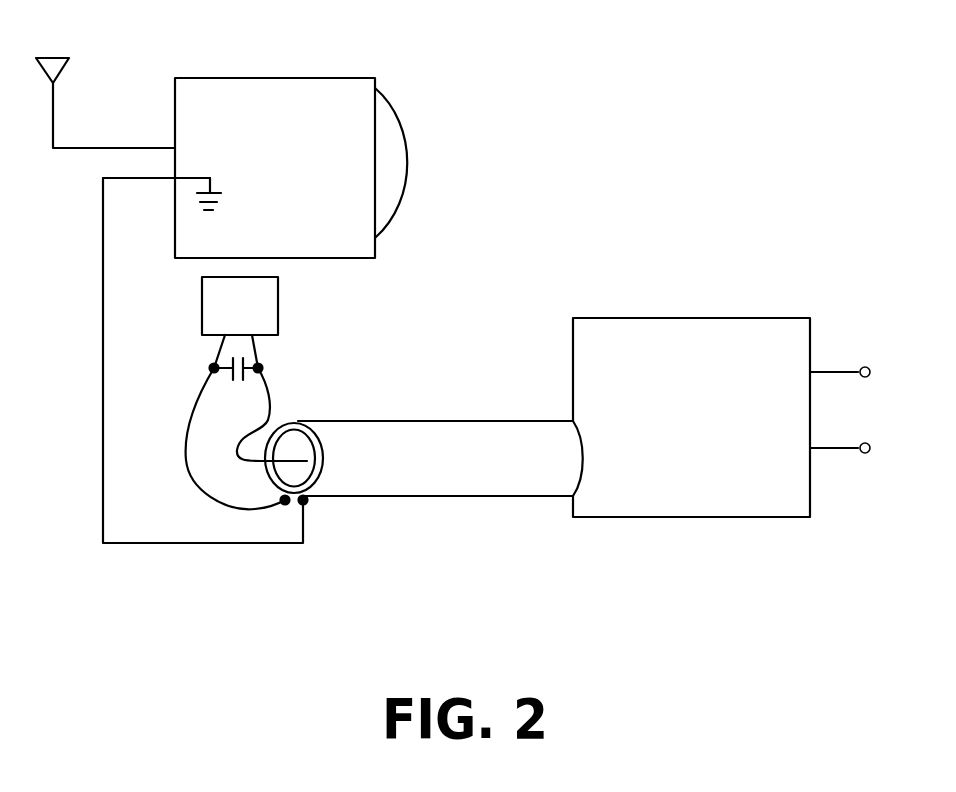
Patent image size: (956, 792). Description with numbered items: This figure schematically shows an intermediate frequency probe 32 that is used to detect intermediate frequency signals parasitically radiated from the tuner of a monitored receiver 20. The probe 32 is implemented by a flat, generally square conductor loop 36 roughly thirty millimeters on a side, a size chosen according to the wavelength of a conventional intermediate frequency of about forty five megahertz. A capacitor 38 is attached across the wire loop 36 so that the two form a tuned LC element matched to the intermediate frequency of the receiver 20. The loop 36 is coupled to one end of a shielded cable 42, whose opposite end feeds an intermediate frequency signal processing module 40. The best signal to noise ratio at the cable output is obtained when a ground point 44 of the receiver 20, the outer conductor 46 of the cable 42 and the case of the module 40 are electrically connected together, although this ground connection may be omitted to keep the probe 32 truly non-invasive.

The receiver 20 is at (349, 105).
The I.F. probe 32 is at (160, 315).
The conductor loop 36 is at (278, 315).
The capacitor 38 is at (207, 382).
The I.F. signal processing module 40 is at (719, 426).
The shielded cable 42 is at (468, 442).
The ground point 44 is at (212, 177).
The outer conductor 46 is at (317, 478).